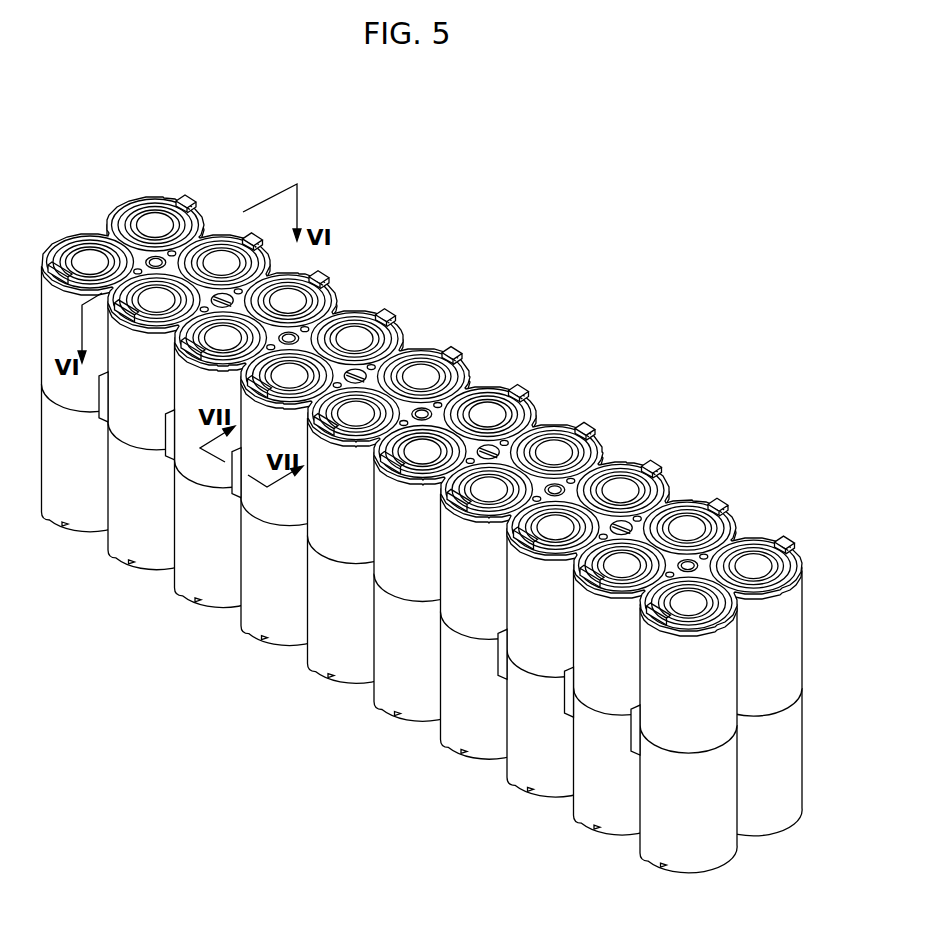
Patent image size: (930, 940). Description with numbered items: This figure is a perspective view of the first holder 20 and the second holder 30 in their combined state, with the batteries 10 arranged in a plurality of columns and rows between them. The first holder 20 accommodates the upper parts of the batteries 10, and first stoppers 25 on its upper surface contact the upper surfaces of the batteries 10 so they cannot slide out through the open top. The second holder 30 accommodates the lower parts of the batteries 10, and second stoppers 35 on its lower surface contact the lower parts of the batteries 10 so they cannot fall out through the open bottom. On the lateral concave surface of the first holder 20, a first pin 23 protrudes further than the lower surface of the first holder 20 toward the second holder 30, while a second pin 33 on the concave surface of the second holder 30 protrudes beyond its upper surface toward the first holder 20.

The battery 10 is at (623, 487).
The first holder 20 is at (426, 549).
The first pin 23 is at (100, 402).
The first stopper 25 is at (452, 351).
The second holder 30 is at (424, 654).
The second pin 33 is at (503, 657).
The second stopper 35 is at (324, 679).